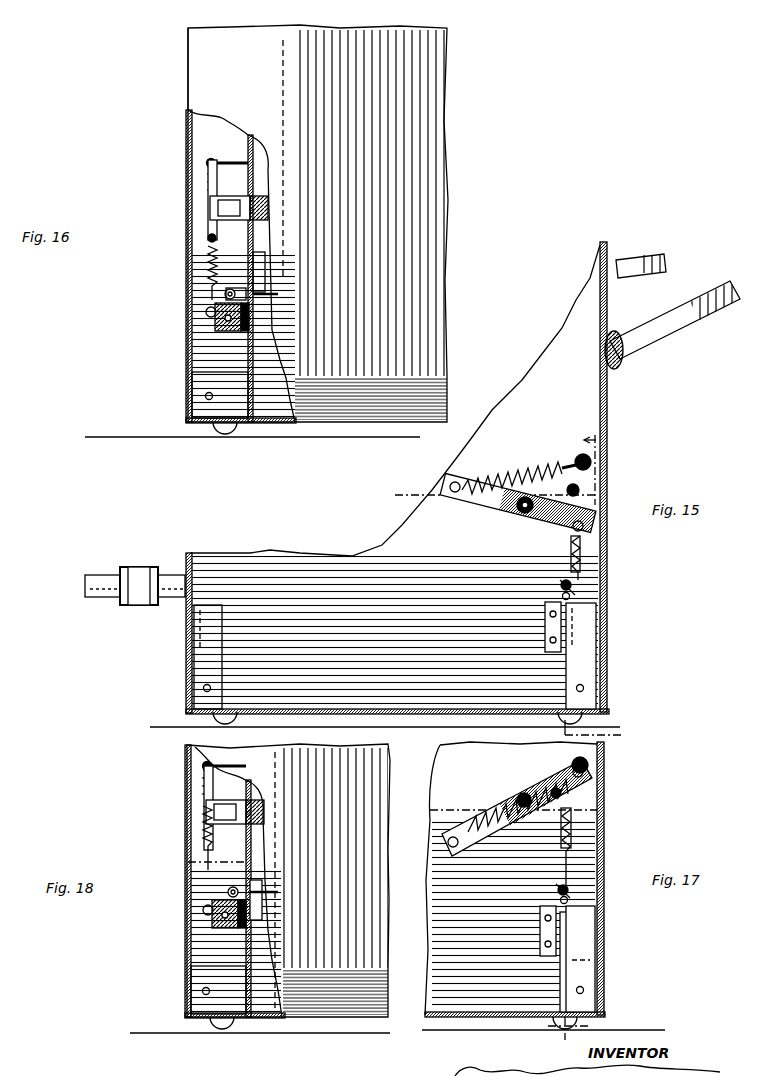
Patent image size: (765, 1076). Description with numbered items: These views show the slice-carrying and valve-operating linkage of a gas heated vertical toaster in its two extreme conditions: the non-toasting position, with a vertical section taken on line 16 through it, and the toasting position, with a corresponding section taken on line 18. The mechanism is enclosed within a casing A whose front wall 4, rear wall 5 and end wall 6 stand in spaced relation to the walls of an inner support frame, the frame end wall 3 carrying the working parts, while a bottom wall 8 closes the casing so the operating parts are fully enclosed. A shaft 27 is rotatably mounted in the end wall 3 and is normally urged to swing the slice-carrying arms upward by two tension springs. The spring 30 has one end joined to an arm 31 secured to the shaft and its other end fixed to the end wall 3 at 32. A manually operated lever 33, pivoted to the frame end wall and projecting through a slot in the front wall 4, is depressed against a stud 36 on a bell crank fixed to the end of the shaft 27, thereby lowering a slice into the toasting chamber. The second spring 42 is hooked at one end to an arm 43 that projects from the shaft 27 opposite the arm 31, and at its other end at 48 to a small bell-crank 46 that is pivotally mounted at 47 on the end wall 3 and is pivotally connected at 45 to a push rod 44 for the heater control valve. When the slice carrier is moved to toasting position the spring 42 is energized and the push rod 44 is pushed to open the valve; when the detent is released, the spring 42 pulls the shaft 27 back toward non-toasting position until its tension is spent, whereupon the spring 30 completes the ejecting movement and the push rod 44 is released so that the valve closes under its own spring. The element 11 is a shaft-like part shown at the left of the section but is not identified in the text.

In FIG. 16, the end wall 3 is at (262, 410).
In FIG. 15, the end wall 3 is at (328, 552).
In FIG. 18, the end wall 3 is at (252, 1005).
In FIG. 17, the end wall 3 is at (520, 1000).
In FIG. 15, the front wall 4 is at (607, 468).
In FIG. 18, the front wall 4 is at (388, 958).
In FIG. 17, the front wall 4 is at (604, 960).
In FIG. 16, the rear wall 5 is at (220, 403).
In FIG. 15, the rear wall 5 is at (186, 640).
In FIG. 18, the rear wall 5 is at (195, 980).
In FIG. 16, the end wall 6 is at (188, 155).
In FIG. 18, the end wall 6 is at (186, 893).
In FIG. 16, the bottom wall 8 is at (318, 408).
In FIG. 15, the bottom wall 8 is at (430, 712).
In FIG. 18, the bottom wall 8 is at (283, 1005).
In FIG. 17, the bottom wall 8 is at (475, 1012).
In FIG. 15, the shaft 11 is at (168, 575).
In FIG. 15, the section line 16 is at (603, 580).
In FIG. 17, the section line 16 is at (633, 737).
In FIG. 17, the section line 18 is at (587, 762).
In FIG. 16, the shaft 27 is at (212, 210).
In FIG. 15, the shaft 27 is at (540, 492).
In FIG. 18, the shaft 27 is at (208, 815).
In FIG. 17, the shaft 27 is at (520, 802).
In FIG. 16, the spring 30 is at (206, 181).
In FIG. 15, the spring 30 is at (515, 480).
In FIG. 18, the spring 30 is at (200, 786).
In FIG. 17, the spring 30 is at (514, 806).
In FIG. 16, the arm 31 is at (209, 203).
In FIG. 15, the arm 31 is at (457, 487).
In FIG. 18, the arm 31 is at (205, 800).
In FIG. 17, the arm 31 is at (470, 850).
In FIG. 16, the connection point 32 is at (218, 162).
In FIG. 15, the connection point 32 is at (580, 458).
In FIG. 18, the connection point 32 is at (192, 766).
In FIG. 17, the connection point 32 is at (588, 770).
In FIG. 15, the manually operated lever 33 is at (622, 370).
In FIG. 15, the stud 36 is at (640, 260).
In FIG. 16, the spring 42 is at (208, 254).
In FIG. 15, the spring 42 is at (582, 553).
In FIG. 18, the spring 42 is at (205, 832).
In FIG. 17, the spring 42 is at (575, 832).
In FIG. 16, the arm 43 is at (208, 238).
In FIG. 15, the arm 43 is at (575, 493).
In FIG. 18, the arm 43 is at (216, 860).
In FIG. 17, the arm 43 is at (554, 790).
In FIG. 16, the push rod 44 is at (258, 276).
In FIG. 18, the push rod 44 is at (288, 920).
In FIG. 16, the pivotal connection 45 is at (224, 292).
In FIG. 15, the pivotal connection 45 is at (575, 583).
In FIG. 18, the pivotal connection 45 is at (228, 892).
In FIG. 17, the pivotal connection 45 is at (572, 888).
In FIG. 16, the small bell-crank 46 is at (220, 322).
In FIG. 18, the small bell-crank 46 is at (216, 922).
In FIG. 17, the small bell-crank 46 is at (558, 908).
In FIG. 16, the pivot 47 is at (242, 318).
In FIG. 15, the pivot 47 is at (562, 608).
In FIG. 18, the pivot 47 is at (240, 915).
In FIG. 17, the pivot 47 is at (575, 912).
In FIG. 16, the connection point 48 is at (206, 312).
In FIG. 15, the connection point 48 is at (570, 598).
In FIG. 18, the connection point 48 is at (203, 912).
In FIG. 17, the connection point 48 is at (568, 896).
In FIG. 16, the casing A is at (186, 372).
In FIG. 15, the casing A is at (612, 628).
In FIG. 18, the casing A is at (186, 792).
In FIG. 17, the casing A is at (612, 925).